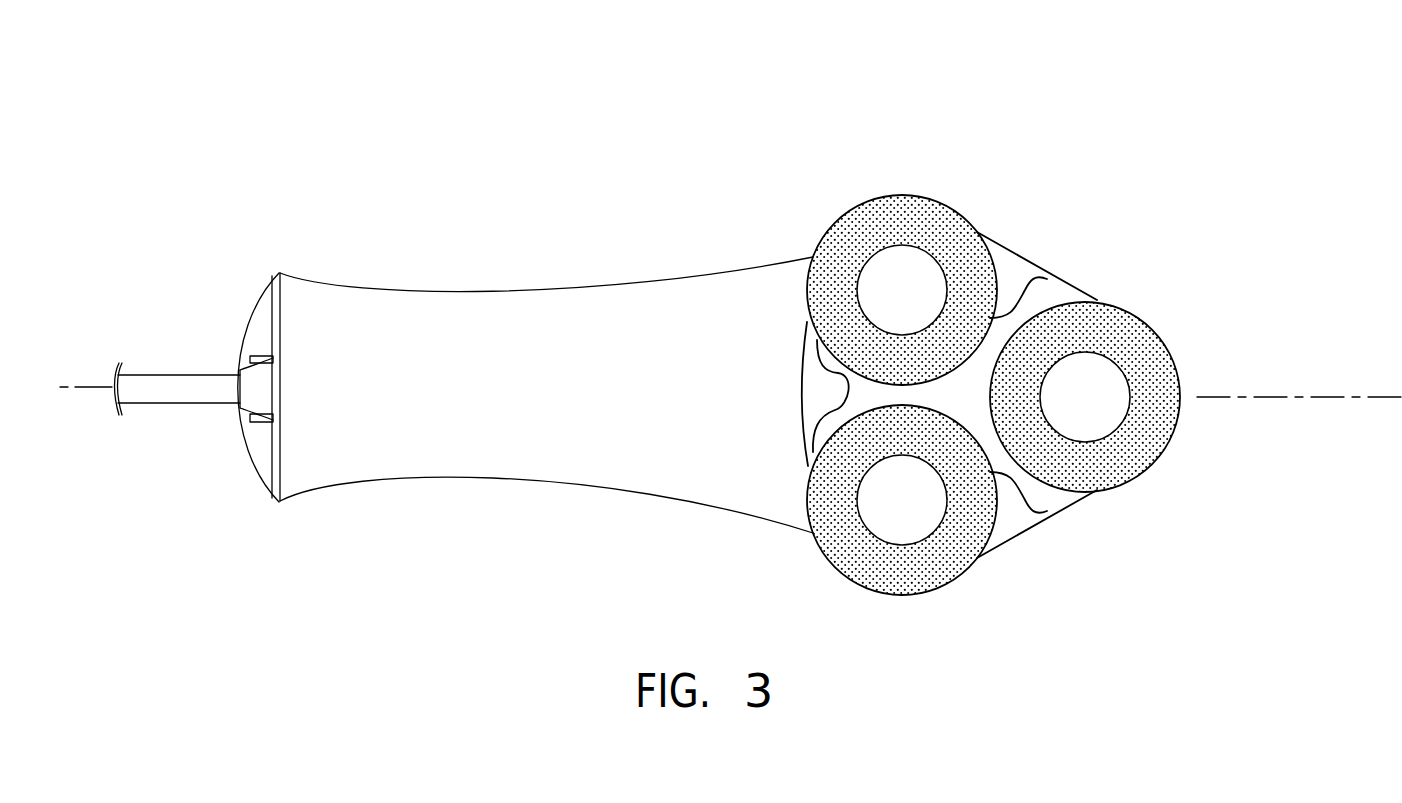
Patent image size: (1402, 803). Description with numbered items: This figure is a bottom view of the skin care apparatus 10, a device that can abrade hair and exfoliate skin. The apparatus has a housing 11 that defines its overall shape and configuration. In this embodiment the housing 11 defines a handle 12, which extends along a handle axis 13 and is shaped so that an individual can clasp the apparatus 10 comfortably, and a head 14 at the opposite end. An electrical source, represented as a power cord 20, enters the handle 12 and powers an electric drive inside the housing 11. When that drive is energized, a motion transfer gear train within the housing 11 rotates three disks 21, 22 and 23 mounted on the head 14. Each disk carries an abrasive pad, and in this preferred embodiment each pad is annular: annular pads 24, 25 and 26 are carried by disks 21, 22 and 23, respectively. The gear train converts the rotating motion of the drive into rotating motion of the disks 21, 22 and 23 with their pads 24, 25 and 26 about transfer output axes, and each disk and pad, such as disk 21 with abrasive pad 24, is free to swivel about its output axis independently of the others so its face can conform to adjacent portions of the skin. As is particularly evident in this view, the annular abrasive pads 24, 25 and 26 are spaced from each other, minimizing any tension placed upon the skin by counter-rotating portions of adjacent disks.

The skin care apparatus 10 is at (705, 122).
The housing 11 is at (485, 275).
The handle 12 is at (610, 427).
The handle axis 13 is at (1288, 397).
The head 14 is at (1037, 532).
The power cord 20 is at (173, 390).
The disk 21 is at (1160, 342).
The disk 22 is at (899, 195).
The disk 23 is at (950, 583).
The annular abrasive pad 24 is at (1143, 430).
The annular abrasive pad 25 is at (952, 238).
The annular abrasive pad 26 is at (847, 542).